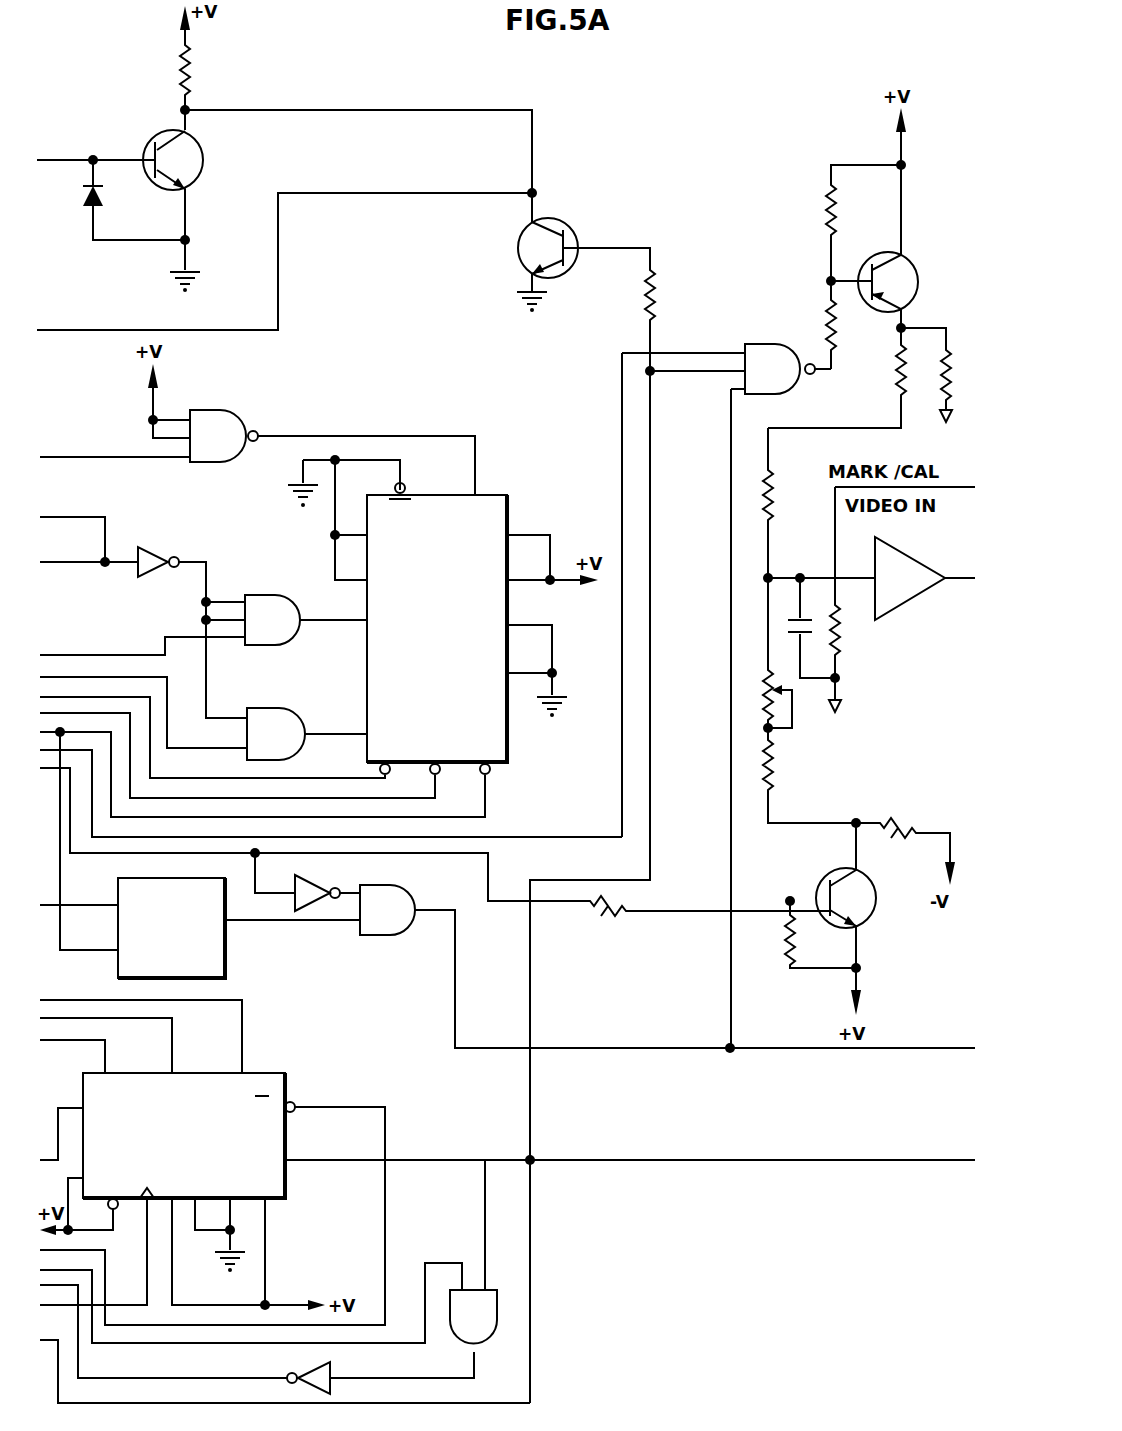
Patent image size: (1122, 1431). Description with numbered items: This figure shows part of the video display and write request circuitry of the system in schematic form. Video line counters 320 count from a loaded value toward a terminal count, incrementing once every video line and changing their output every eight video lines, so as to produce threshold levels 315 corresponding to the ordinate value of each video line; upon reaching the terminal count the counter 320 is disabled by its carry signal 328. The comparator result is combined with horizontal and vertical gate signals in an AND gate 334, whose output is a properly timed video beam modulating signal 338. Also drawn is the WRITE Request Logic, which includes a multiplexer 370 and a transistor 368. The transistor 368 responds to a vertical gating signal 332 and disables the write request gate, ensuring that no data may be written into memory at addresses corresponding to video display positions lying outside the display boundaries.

The threshold levels 315 is at (100, 985).
The video line counters 320 is at (282, 1068).
The carry signal 328 is at (440, 1160).
The vertical gating signal 332 is at (500, 1403).
The AND gate 334 is at (768, 344).
The video beam modulating signal 338 is at (952, 575).
The transistor 368 is at (518, 245).
The multiplexer 370 is at (507, 495).